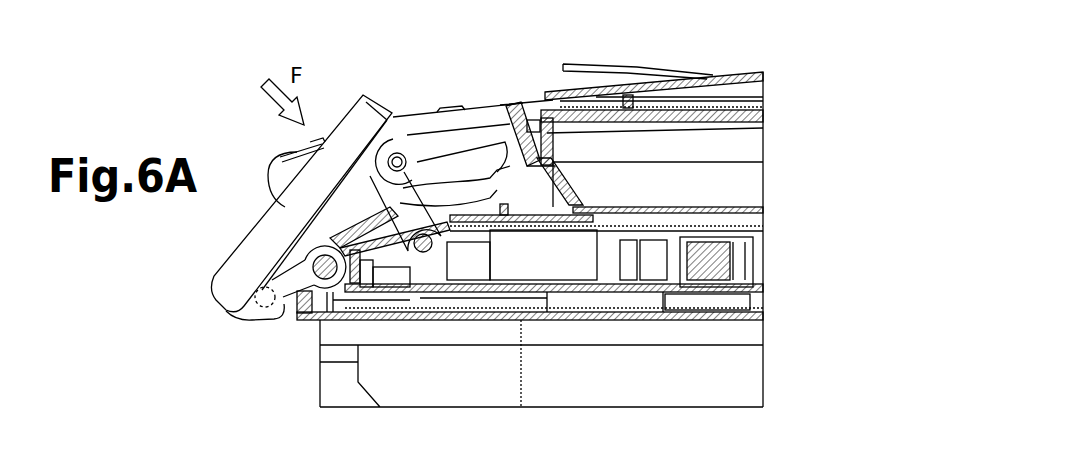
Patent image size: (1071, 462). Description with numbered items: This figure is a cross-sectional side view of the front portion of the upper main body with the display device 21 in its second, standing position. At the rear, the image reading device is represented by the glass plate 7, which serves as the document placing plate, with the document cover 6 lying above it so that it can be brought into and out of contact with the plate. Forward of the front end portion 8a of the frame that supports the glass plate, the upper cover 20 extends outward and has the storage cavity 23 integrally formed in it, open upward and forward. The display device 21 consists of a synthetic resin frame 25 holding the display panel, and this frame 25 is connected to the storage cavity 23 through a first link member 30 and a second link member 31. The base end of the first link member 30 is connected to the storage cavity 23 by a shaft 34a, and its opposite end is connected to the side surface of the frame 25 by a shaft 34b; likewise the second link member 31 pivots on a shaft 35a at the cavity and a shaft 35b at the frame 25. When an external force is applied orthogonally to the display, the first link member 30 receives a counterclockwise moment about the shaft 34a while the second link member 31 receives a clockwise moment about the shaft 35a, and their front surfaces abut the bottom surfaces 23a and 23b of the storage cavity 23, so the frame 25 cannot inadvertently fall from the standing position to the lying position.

The document cover 6 is at (728, 74).
The glass plate 7 is at (706, 123).
The front end portion 8a is at (540, 108).
The upper cover 20 is at (439, 137).
The display device 21 is at (257, 211).
The storage cavity 23 is at (488, 114).
The bottom surface 23a is at (319, 313).
The bottom surface 23b is at (410, 290).
The frame 25 is at (240, 270).
The first link member 30 is at (288, 312).
The second link member 31 is at (395, 207).
The shaft 34a is at (327, 290).
The shaft 34b is at (257, 318).
The shaft 35a is at (426, 280).
The shaft 35b is at (397, 152).